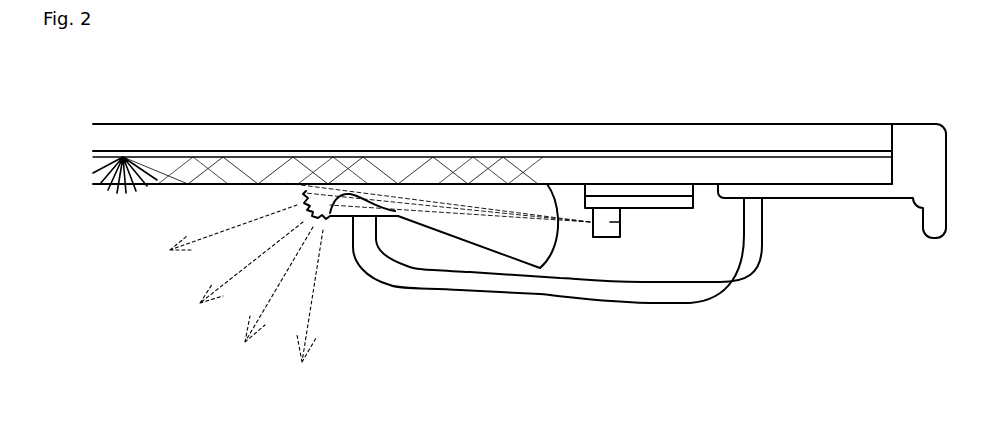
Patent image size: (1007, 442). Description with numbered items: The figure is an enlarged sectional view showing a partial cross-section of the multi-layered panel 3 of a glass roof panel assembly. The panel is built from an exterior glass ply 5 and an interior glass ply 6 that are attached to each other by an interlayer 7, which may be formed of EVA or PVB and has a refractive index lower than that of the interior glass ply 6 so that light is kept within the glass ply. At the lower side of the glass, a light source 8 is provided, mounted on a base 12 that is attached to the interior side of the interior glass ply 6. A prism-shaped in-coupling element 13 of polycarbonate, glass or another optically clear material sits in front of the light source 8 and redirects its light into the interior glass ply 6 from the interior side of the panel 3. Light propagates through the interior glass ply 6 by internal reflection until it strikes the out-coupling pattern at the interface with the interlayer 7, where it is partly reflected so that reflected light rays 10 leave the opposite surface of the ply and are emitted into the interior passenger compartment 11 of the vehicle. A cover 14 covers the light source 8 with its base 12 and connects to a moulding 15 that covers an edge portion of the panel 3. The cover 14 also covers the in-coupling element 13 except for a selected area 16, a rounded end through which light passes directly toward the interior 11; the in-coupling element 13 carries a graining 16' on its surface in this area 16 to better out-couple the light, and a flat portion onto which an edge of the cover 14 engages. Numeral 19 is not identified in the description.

The multi-layered panel 3 is at (805, 100).
The exterior glass ply 5 is at (167, 137).
The interior glass ply 6 is at (260, 167).
The interlayer 7 is at (210, 155).
The light source 8 is at (620, 224).
The reflected light rays 10 is at (118, 190).
The interior passenger compartment 11 is at (490, 418).
The base 12 is at (607, 206).
The in-coupling element 13 is at (520, 193).
The cover 14 is at (757, 225).
The moulding 15 is at (860, 196).
The selected area 16 is at (390, 129).
The graining 16' is at (284, 204).
The light guide section 19 is at (422, 165).